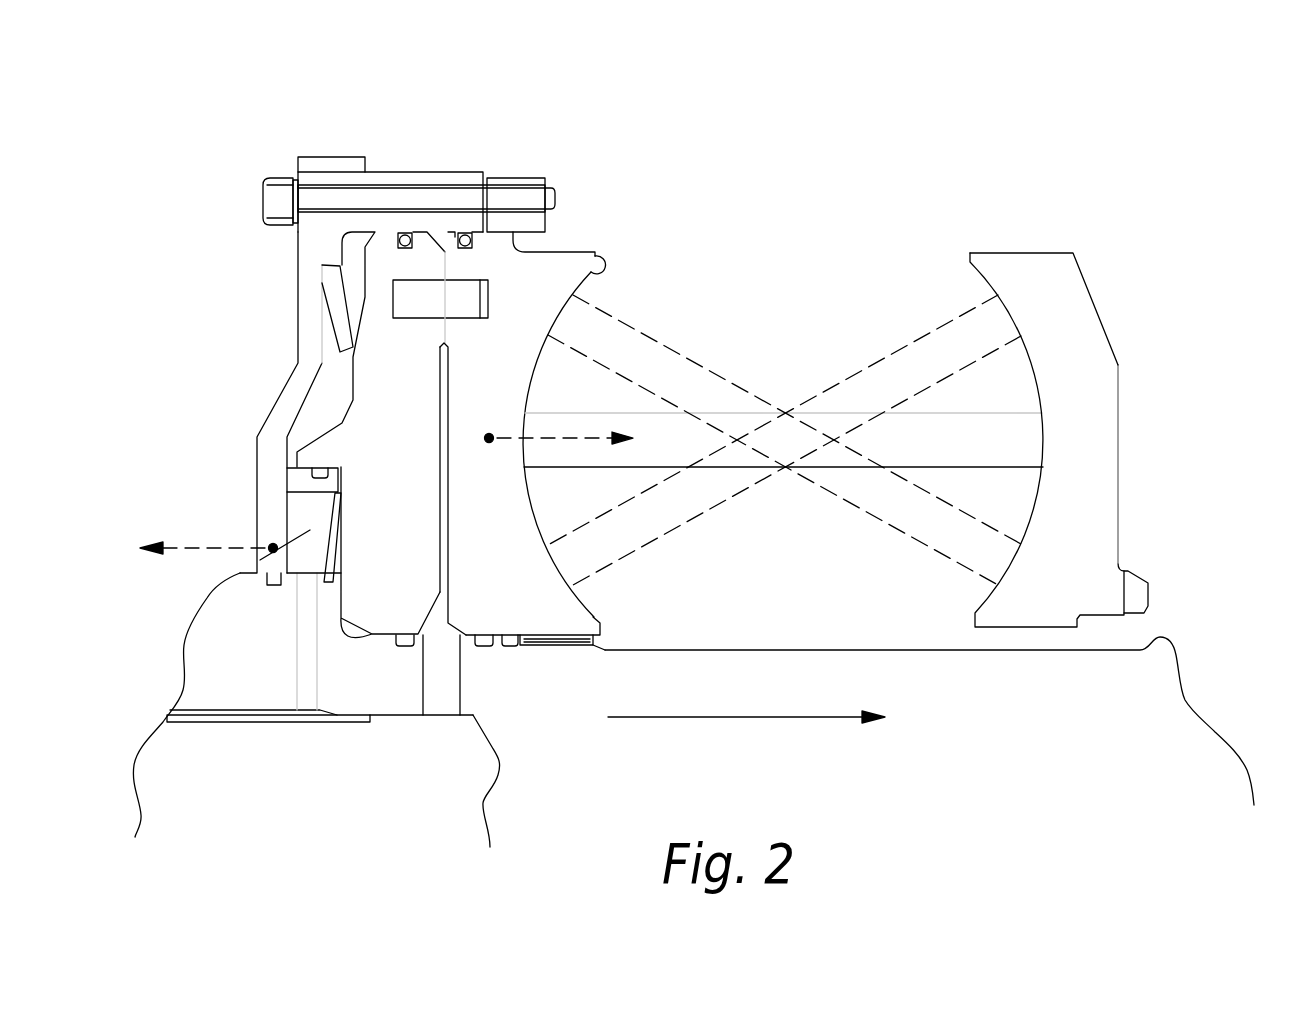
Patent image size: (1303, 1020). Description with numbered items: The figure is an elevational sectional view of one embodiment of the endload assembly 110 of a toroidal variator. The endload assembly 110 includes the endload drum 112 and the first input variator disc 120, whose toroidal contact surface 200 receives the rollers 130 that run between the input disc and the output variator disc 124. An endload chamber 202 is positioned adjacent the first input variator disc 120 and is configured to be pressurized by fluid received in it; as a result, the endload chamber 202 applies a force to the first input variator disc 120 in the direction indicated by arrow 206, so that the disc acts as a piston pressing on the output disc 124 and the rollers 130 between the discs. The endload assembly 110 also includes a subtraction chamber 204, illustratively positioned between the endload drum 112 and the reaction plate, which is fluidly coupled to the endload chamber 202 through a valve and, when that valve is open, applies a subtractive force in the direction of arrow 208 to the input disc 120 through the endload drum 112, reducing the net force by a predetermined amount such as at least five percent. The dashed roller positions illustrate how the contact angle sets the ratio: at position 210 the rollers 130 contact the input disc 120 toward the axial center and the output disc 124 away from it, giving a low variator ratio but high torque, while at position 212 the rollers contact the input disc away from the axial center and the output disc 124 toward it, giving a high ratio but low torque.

The endload assembly 110 is at (402, 136).
The endload drum 112 is at (277, 408).
The first input variator disc 120 is at (500, 410).
The output variator disc 124 is at (1082, 302).
The rollers 130 is at (978, 413).
The toroidal contact surface 200 is at (598, 254).
The endload chamber 202 is at (446, 533).
The subtraction chamber 204 is at (293, 512).
The arrow indicating endload force 206 is at (563, 438).
The arrow indicating subtractive force 208 is at (198, 552).
The low-ratio roller position 210 is at (900, 355).
The high-ratio roller position 212 is at (668, 355).